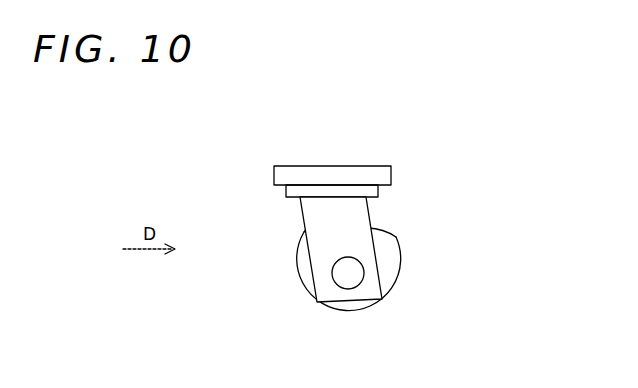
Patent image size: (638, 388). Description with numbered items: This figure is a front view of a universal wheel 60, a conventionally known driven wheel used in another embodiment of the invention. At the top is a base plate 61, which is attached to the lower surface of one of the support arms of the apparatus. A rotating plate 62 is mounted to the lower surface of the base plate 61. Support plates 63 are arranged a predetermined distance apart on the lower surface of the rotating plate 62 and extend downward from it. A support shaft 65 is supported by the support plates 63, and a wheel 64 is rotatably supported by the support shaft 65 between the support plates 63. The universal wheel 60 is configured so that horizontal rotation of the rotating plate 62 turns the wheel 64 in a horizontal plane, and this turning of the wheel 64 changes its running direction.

The universal wheel 60 is at (519, 163).
The base plate 61 is at (274, 173).
The rotating plate 62 is at (378, 192).
The support plates 63 is at (307, 236).
The wheel 64 is at (393, 275).
The support shaft 65 is at (338, 280).